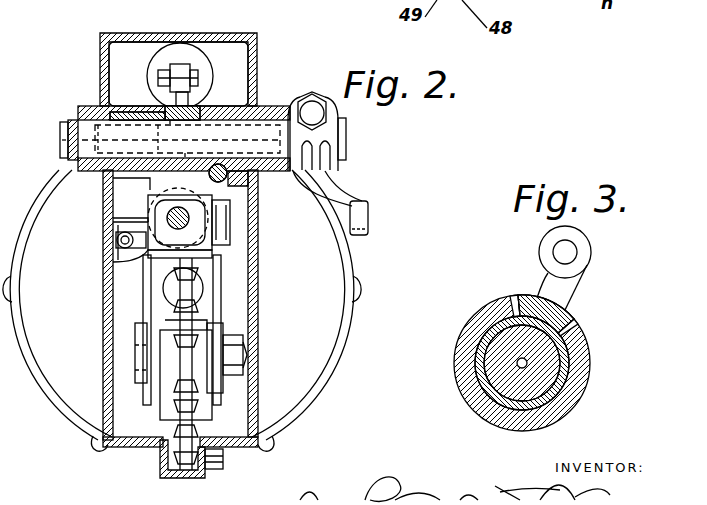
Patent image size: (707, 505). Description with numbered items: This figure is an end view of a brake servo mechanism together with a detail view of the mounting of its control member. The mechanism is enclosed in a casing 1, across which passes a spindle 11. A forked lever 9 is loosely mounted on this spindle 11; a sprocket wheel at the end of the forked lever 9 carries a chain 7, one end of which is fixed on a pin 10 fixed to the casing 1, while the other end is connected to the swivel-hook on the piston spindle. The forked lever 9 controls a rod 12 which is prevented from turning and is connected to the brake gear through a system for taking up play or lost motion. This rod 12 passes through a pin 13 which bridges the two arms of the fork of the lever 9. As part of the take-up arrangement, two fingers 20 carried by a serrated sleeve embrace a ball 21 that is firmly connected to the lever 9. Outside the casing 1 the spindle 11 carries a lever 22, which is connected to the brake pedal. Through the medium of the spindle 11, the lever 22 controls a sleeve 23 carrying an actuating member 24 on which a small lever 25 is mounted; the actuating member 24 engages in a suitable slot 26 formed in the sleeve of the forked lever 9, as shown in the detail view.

In FIG. 2, the casing 1 is at (345, 323).
In FIG. 2, the chain 7 is at (185, 406).
In FIG. 2, the forked lever 9 is at (215, 316).
In FIG. 3, the forked lever 9 is at (468, 344).
In FIG. 2, the pin 10 is at (218, 456).
In FIG. 2, the spindle 11 is at (125, 135).
In FIG. 2, the rod 12 is at (170, 220).
In FIG. 2, the pin 13 is at (228, 222).
In FIG. 2, the fingers 20 is at (118, 221).
In FIG. 2, the ball 21 is at (122, 242).
In FIG. 2, the lever 22 is at (357, 204).
In FIG. 2, the sleeve 23 is at (228, 108).
In FIG. 2, the actuating member 24 is at (196, 106).
In FIG. 3, the actuating member 24 is at (565, 311).
In FIG. 2, the small lever 25 is at (181, 68).
In FIG. 3, the small lever 25 is at (543, 253).
In FIG. 2, the slot 26 is at (162, 107).
In FIG. 3, the slot 26 is at (572, 341).